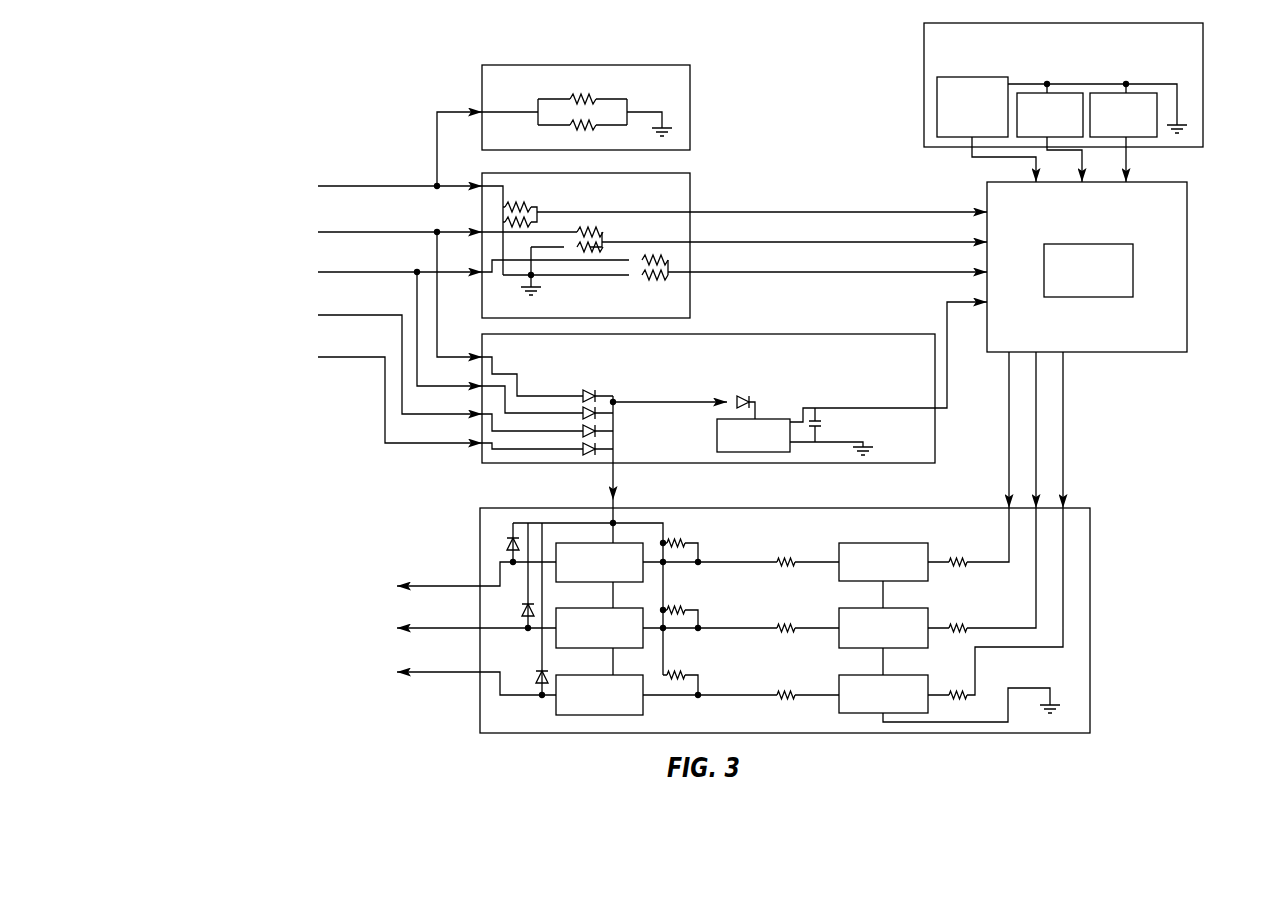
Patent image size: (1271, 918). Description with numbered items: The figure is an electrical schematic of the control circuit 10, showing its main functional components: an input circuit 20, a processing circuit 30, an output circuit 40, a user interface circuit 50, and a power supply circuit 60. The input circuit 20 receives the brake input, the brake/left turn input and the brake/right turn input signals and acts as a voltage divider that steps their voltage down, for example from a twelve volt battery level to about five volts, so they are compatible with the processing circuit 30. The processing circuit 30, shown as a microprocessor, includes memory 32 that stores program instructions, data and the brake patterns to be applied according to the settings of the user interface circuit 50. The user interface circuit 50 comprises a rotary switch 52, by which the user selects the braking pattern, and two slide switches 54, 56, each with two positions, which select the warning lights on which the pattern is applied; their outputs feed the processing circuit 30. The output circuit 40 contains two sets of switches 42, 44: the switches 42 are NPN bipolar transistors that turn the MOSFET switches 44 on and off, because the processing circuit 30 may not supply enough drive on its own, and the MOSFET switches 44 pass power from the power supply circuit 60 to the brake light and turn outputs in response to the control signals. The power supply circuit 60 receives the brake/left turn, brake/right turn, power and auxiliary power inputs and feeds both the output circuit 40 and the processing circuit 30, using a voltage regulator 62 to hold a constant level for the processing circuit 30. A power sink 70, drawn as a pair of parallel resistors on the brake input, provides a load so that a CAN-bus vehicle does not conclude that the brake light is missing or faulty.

The control circuit 10 is at (352, 67).
The input circuit 20 is at (690, 190).
The processing circuit 30 is at (1187, 235).
The memory 32 is at (1078, 290).
The output circuit 40 is at (1090, 540).
The switches 42 is at (902, 543).
The MOSFET switches 44 is at (630, 543).
The user interface circuit 50 is at (1203, 88).
The rotary switch 52 is at (982, 77).
The slide switch 54 is at (1072, 93).
The slide switch 56 is at (1140, 93).
The power supply circuit 60 is at (875, 334).
The voltage regulator 62 is at (717, 424).
The power sink 70 is at (690, 97).